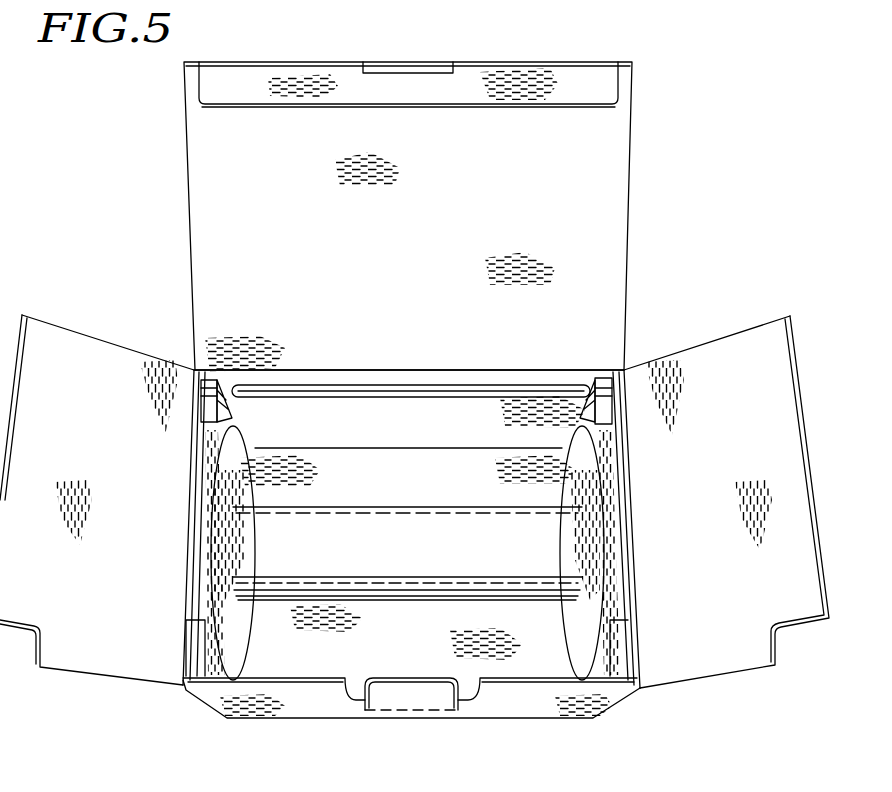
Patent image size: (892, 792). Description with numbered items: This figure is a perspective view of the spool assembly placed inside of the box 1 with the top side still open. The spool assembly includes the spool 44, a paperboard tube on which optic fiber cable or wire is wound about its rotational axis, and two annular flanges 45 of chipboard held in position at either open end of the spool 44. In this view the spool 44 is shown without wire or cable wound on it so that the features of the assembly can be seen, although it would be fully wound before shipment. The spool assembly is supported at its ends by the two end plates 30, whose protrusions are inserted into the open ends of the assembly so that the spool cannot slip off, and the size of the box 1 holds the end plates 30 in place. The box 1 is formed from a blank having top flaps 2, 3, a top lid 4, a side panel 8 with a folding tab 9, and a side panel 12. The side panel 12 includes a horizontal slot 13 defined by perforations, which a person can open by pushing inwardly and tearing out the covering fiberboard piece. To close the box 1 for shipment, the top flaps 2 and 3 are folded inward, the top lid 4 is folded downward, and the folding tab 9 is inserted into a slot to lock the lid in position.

The box 1 is at (652, 193).
The top flap 2 is at (131, 514).
The top flap 3 is at (690, 514).
The top lid 4 is at (418, 247).
The side panel 8 is at (522, 700).
The folding tab 9 is at (403, 700).
The side panel 12 is at (421, 434).
The slot 13 is at (272, 386).
The end plate 30 is at (184, 666).
The spool 44 is at (398, 578).
The flange 45 is at (243, 490).